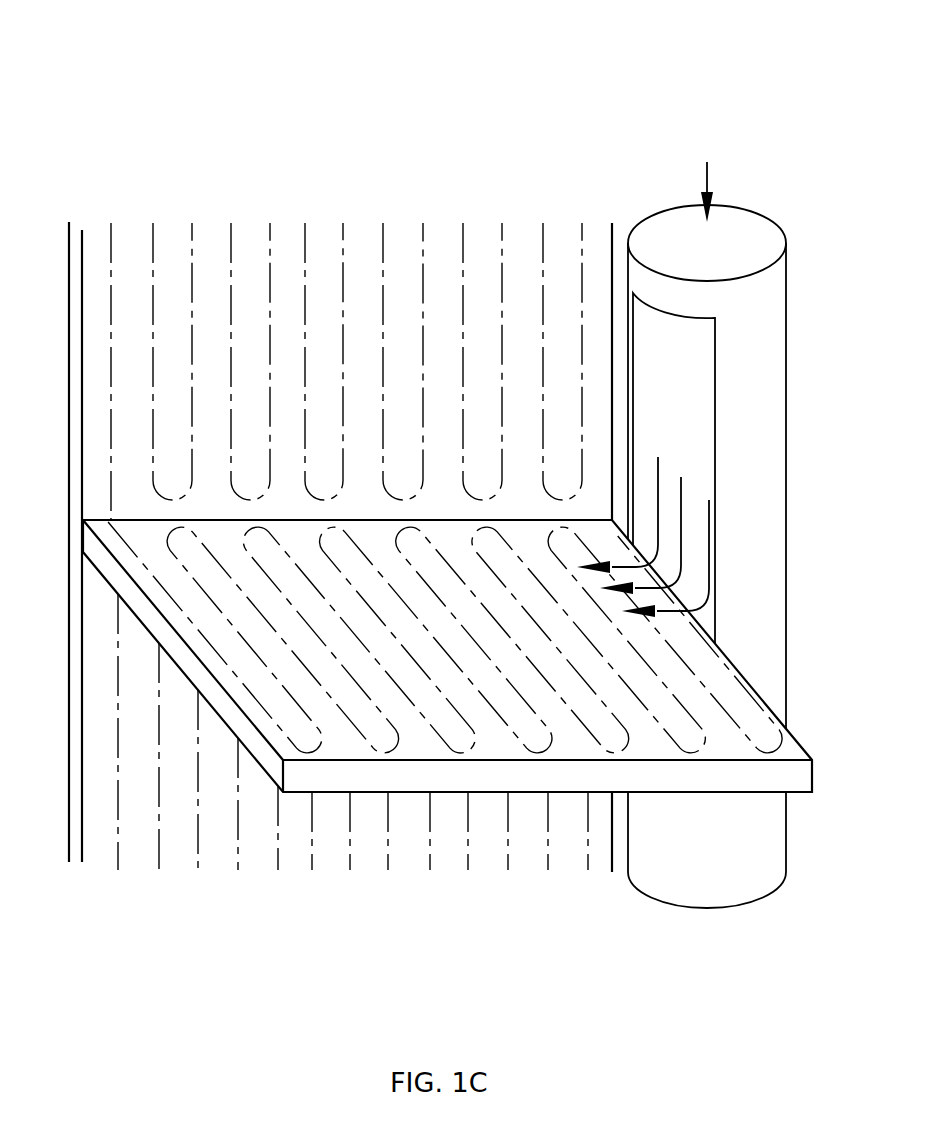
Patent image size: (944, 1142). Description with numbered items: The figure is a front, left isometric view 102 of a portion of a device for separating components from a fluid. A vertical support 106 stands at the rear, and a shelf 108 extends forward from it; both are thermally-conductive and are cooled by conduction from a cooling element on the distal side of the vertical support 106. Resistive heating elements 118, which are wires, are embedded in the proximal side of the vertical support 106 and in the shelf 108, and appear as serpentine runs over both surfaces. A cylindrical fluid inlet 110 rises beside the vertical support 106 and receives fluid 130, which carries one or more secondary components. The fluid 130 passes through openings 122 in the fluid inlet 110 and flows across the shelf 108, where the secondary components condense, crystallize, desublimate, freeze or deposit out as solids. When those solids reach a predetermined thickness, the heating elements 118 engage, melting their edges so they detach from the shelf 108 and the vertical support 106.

The front, left isometric view of a portion of the device 102 is at (140, 56).
The vertical support 106 is at (97, 237).
The resistive heating elements 118 is at (115, 240).
The shelves 108 is at (762, 780).
The fluid inlet 110 is at (787, 307).
The openings 122 is at (687, 347).
The fluid 130 is at (738, 553).